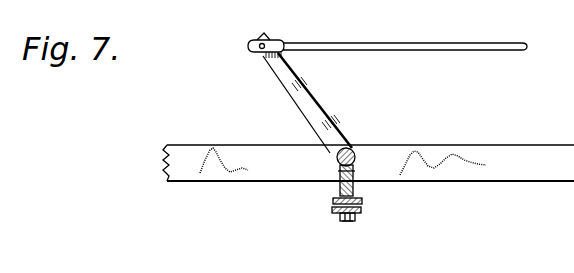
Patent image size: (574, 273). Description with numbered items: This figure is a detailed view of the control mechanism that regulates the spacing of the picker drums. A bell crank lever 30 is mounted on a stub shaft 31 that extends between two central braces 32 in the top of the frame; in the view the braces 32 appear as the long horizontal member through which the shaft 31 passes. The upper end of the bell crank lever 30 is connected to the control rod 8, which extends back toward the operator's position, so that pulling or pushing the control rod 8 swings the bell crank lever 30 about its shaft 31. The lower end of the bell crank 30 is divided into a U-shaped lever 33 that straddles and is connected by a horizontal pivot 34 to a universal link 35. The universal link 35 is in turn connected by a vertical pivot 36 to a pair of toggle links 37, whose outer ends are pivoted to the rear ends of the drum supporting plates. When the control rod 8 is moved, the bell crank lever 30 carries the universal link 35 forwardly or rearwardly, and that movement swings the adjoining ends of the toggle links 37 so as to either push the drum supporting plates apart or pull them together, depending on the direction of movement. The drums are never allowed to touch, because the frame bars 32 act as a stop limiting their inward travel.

The control rod 8 is at (405, 43).
The bell crank lever 30 is at (315, 105).
The stub shaft 31 is at (355, 152).
The central braces 32 is at (484, 148).
The U-shaped lever 33 is at (354, 168).
The horizontal pivot 34 is at (338, 186).
The universal link 35 is at (332, 201).
The vertical pivot 36 is at (352, 222).
The toggle links 37 is at (335, 212).